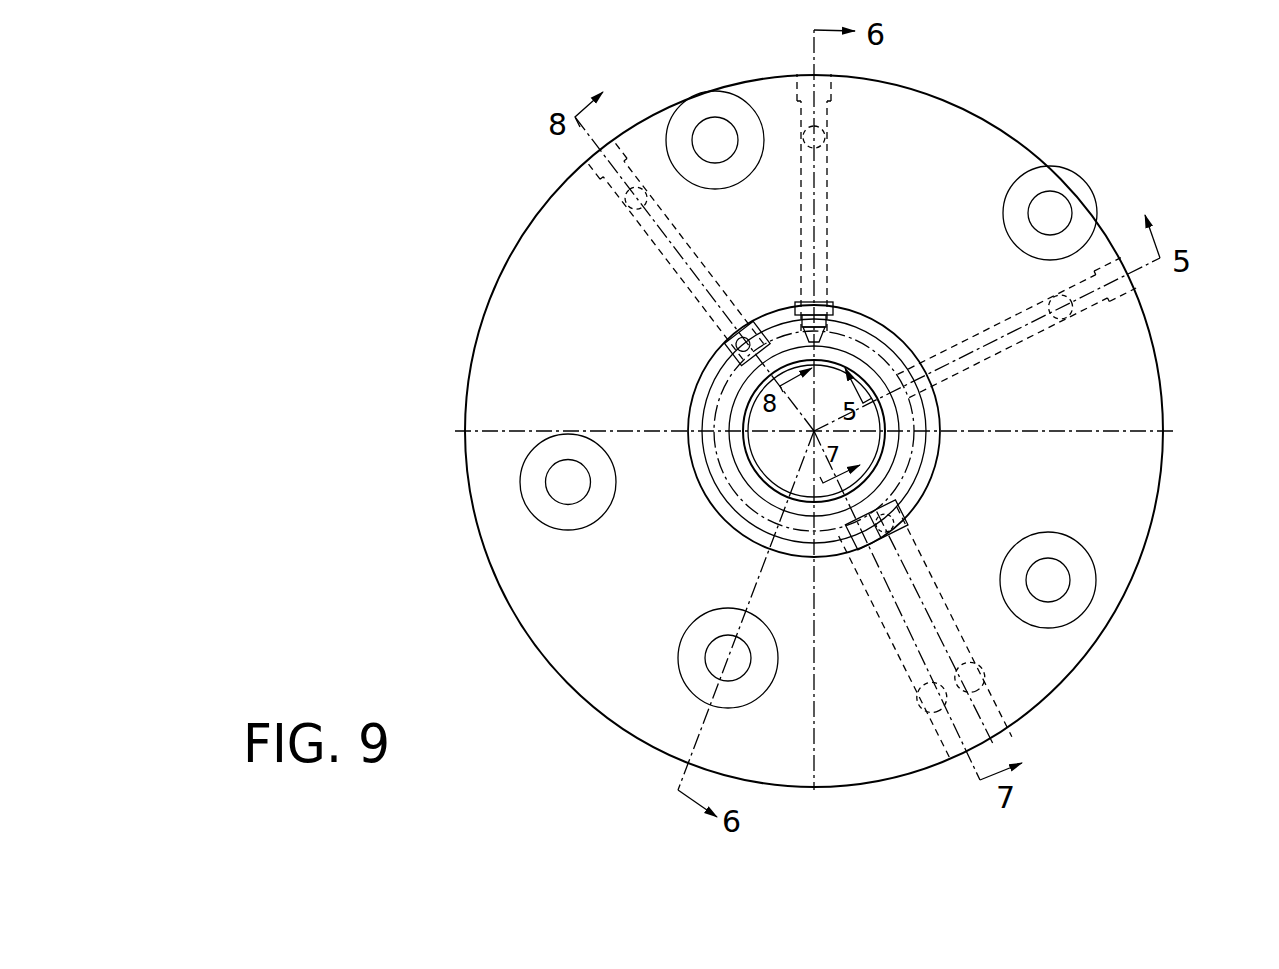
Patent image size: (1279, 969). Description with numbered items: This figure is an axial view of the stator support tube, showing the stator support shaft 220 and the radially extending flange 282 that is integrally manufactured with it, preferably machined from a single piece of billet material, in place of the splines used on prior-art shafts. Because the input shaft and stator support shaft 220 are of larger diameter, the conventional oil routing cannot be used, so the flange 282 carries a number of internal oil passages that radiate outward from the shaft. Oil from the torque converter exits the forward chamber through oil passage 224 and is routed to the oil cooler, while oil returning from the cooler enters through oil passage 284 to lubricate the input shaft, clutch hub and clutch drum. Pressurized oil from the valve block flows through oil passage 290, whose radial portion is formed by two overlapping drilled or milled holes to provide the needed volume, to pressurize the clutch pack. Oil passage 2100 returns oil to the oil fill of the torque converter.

The stator support shaft 220 is at (703, 415).
The oil passage 224 is at (1000, 348).
The radially extending flange 282 is at (520, 340).
The oil passage 284 is at (830, 177).
The oil passage 290 is at (899, 658).
The oil passage 2100 is at (650, 243).